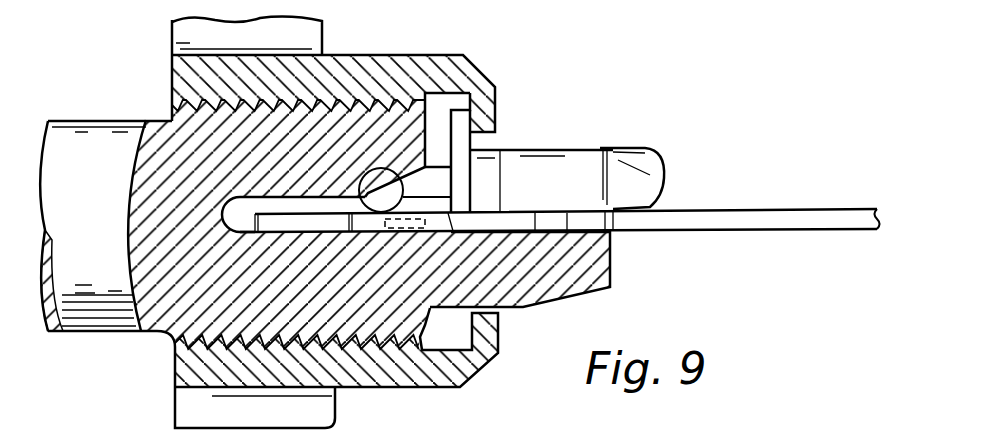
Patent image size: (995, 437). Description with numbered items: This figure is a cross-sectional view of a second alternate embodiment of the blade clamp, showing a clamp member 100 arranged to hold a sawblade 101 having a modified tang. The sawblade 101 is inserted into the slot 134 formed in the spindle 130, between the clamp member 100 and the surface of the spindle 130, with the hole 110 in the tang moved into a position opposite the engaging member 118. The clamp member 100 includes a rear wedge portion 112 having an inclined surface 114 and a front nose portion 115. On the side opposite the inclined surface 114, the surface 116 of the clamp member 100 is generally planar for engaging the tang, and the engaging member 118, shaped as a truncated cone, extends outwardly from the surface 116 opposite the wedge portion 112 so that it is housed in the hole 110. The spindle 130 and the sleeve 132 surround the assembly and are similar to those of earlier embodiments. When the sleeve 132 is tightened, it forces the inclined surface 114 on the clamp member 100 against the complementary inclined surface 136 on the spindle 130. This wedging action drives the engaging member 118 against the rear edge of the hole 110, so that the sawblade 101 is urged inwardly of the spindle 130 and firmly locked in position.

The clamp member 100 is at (578, 118).
The sawblade 101 is at (784, 199).
The hole 110 is at (417, 232).
The rear wedge portion 112 is at (453, 198).
The inclined surface 114 is at (395, 175).
The front nose portion 115 is at (640, 173).
The surface 116 is at (448, 231).
The engaging member 118 is at (392, 230).
The spindle 130 is at (92, 292).
The sleeve 132 is at (183, 383).
The slot 134 is at (218, 216).
The inclined surface 136 is at (360, 187).